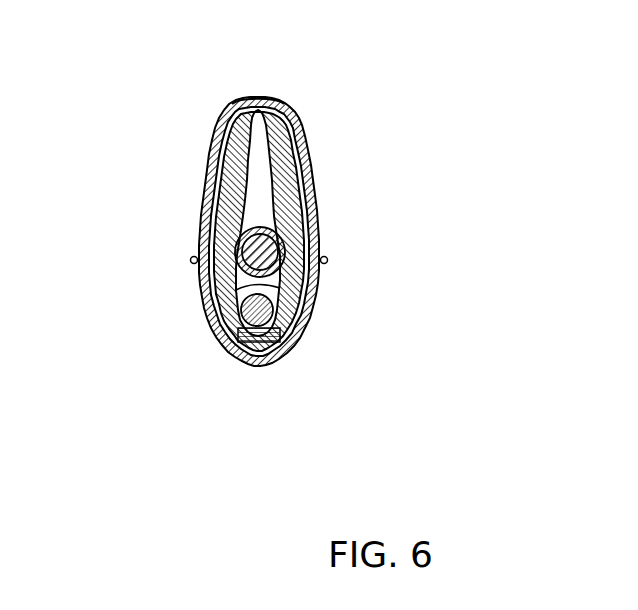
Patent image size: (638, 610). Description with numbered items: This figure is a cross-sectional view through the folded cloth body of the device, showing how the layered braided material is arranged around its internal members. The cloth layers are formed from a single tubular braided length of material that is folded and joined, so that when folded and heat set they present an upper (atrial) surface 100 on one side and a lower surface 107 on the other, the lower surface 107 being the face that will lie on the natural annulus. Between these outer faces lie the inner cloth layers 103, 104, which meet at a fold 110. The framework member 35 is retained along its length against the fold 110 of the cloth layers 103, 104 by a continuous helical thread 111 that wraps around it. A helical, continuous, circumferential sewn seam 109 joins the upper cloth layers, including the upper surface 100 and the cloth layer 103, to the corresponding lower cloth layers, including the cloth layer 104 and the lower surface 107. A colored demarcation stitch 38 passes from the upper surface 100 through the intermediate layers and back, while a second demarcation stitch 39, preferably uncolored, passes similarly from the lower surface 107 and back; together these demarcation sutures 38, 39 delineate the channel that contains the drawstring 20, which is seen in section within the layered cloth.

The upper (atrial) surface 100 is at (201, 183).
The cloth layer 103 is at (213, 150).
The cloth layer 104 is at (310, 158).
The lower surface 107 is at (320, 204).
The helical, continuous, circumferential sewn seam 109 is at (257, 98).
The framework member 35 is at (212, 238).
The colored demarcation stitch 38 is at (191, 262).
The second demarcation stitch 39 is at (328, 260).
The fold 110 is at (202, 316).
The drawstring 20 is at (226, 340).
The continuous helical thread 111 is at (258, 368).